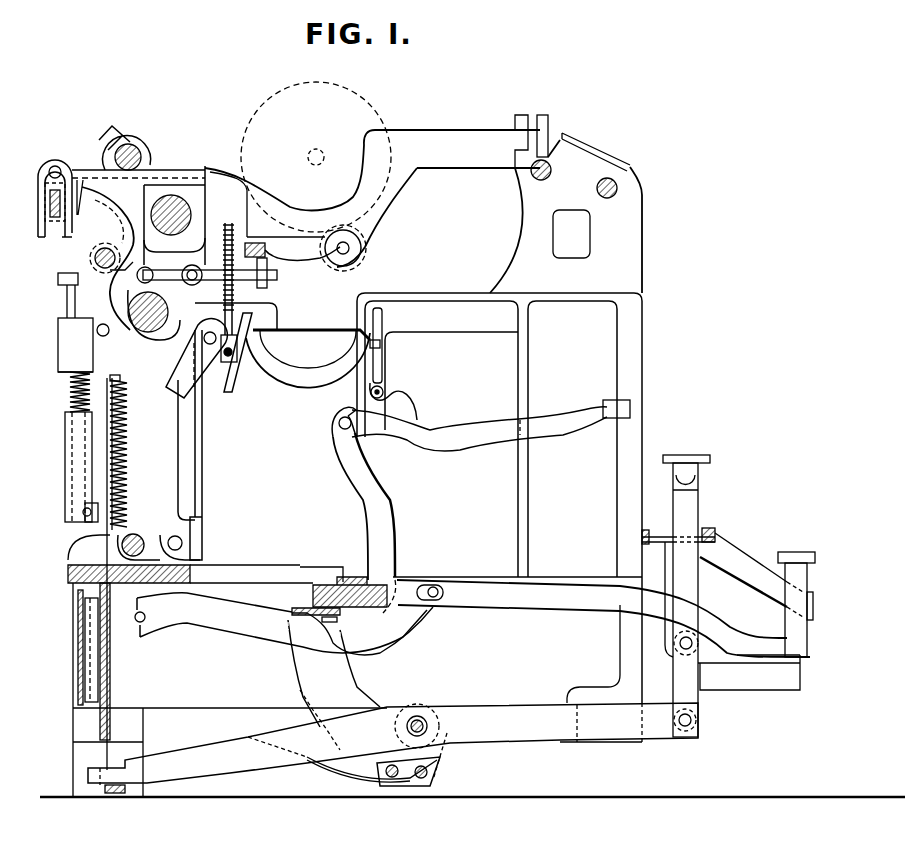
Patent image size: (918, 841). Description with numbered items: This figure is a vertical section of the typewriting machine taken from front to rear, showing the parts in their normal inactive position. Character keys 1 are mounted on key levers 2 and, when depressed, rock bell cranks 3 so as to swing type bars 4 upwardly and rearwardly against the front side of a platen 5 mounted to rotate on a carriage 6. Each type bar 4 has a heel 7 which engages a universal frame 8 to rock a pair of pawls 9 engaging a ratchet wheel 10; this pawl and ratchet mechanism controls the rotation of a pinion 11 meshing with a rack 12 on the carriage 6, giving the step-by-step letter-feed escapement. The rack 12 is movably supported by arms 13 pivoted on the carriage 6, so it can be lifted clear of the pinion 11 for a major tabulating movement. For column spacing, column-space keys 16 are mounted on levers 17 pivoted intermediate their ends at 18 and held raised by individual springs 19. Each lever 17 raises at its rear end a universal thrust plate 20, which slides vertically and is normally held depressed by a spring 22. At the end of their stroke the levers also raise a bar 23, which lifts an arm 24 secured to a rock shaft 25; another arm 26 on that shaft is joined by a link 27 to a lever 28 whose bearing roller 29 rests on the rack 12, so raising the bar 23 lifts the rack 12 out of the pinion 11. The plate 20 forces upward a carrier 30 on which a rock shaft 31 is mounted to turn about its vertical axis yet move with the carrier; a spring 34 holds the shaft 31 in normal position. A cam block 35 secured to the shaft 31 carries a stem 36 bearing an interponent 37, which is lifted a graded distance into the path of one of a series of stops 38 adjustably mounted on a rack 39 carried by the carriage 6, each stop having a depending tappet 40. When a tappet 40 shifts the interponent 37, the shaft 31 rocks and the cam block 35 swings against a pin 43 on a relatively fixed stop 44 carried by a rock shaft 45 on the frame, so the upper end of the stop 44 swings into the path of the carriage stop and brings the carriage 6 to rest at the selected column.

The character keys 1 is at (790, 552).
The key levers 2 is at (572, 585).
The bell cranks 3 is at (392, 525).
The type bars 4 is at (545, 425).
The platen 5 is at (377, 118).
The carriage 6 is at (453, 138).
The heel 7 is at (390, 390).
The universal frame 8 is at (310, 330).
The pawls 9 is at (240, 328).
The ratchet wheel 10 is at (224, 254).
The pinion 11 is at (252, 243).
The rack 12 is at (290, 234).
The arms 13 is at (336, 243).
The column-space keys 16 is at (698, 496).
The levers 17 is at (88, 776).
The pivot 18 is at (428, 730).
The springs 19 is at (332, 775).
The universal thrust plate 20 is at (137, 632).
The spring 22 is at (128, 472).
The bar 23 is at (78, 672).
The arm 24 is at (68, 562).
The rock shaft 25 is at (130, 566).
The arm 26 is at (170, 535).
The link 27 is at (196, 430).
The lever 28 is at (158, 268).
The bearing roller 29 is at (268, 285).
The carrier 30 is at (65, 465).
The rock shaft 31 is at (75, 345).
The spring 34 is at (70, 392).
The cam block 35 is at (58, 362).
The stem 36 is at (66, 300).
The interponent 37 is at (58, 276).
The stops 38 is at (50, 167).
The rack 39 is at (45, 238).
The tappet 40 is at (67, 236).
The pin 43 is at (106, 336).
The fixed stop 44 is at (82, 178).
The rock shaft 45 is at (112, 256).